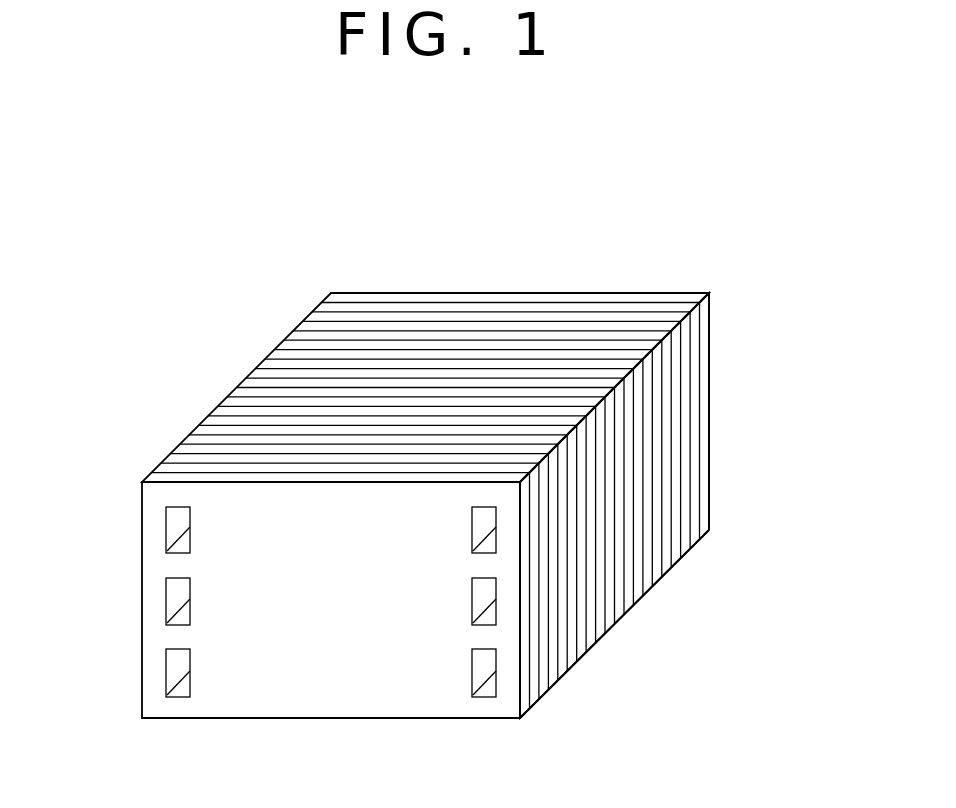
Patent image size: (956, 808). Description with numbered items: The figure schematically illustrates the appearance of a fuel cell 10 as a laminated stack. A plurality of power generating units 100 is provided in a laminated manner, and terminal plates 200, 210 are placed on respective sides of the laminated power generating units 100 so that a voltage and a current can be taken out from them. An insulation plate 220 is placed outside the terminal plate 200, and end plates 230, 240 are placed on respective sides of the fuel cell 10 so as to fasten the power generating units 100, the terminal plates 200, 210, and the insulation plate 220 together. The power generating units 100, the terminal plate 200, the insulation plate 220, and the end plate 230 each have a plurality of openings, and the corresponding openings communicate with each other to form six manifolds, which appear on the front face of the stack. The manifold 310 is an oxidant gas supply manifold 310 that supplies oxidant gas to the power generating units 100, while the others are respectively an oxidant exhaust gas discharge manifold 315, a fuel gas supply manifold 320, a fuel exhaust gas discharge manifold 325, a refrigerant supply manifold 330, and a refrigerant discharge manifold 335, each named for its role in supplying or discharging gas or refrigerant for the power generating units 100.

The fuel cell 10 is at (224, 310).
The power generating units 100 is at (553, 687).
The terminal plate 200 is at (540, 706).
The terminal plate 210 is at (696, 544).
The insulation plate 220 is at (533, 726).
The end plate 230 is at (525, 722).
The end plate 240 is at (708, 532).
The oxidant gas supply manifold 310 is at (166, 527).
The oxidant exhaust gas discharge manifold 315 is at (472, 673).
The fuel gas supply manifold 320 is at (166, 673).
The fuel exhaust gas discharge manifold 325 is at (472, 527).
The refrigerant supply manifold 330 is at (166, 603).
The refrigerant discharge manifold 335 is at (472, 603).